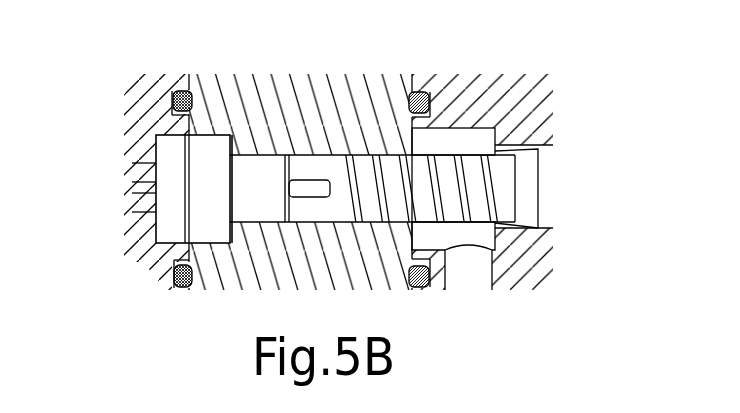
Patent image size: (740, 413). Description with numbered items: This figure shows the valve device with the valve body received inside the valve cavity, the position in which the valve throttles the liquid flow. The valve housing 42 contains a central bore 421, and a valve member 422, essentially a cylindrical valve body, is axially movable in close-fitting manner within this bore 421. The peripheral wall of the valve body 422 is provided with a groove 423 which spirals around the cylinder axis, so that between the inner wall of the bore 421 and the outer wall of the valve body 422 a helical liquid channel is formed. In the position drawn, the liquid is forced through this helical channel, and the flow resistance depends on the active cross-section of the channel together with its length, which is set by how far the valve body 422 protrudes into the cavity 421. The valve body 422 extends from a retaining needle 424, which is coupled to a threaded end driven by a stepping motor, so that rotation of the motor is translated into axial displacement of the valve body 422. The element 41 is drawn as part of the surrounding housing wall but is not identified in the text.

The first housing wall 41 is at (148, 97).
The valve housing 42 is at (338, 95).
The central bore 421 is at (265, 178).
The valve member 422 is at (460, 205).
The groove 423 is at (432, 170).
The retaining needle 424 is at (538, 190).